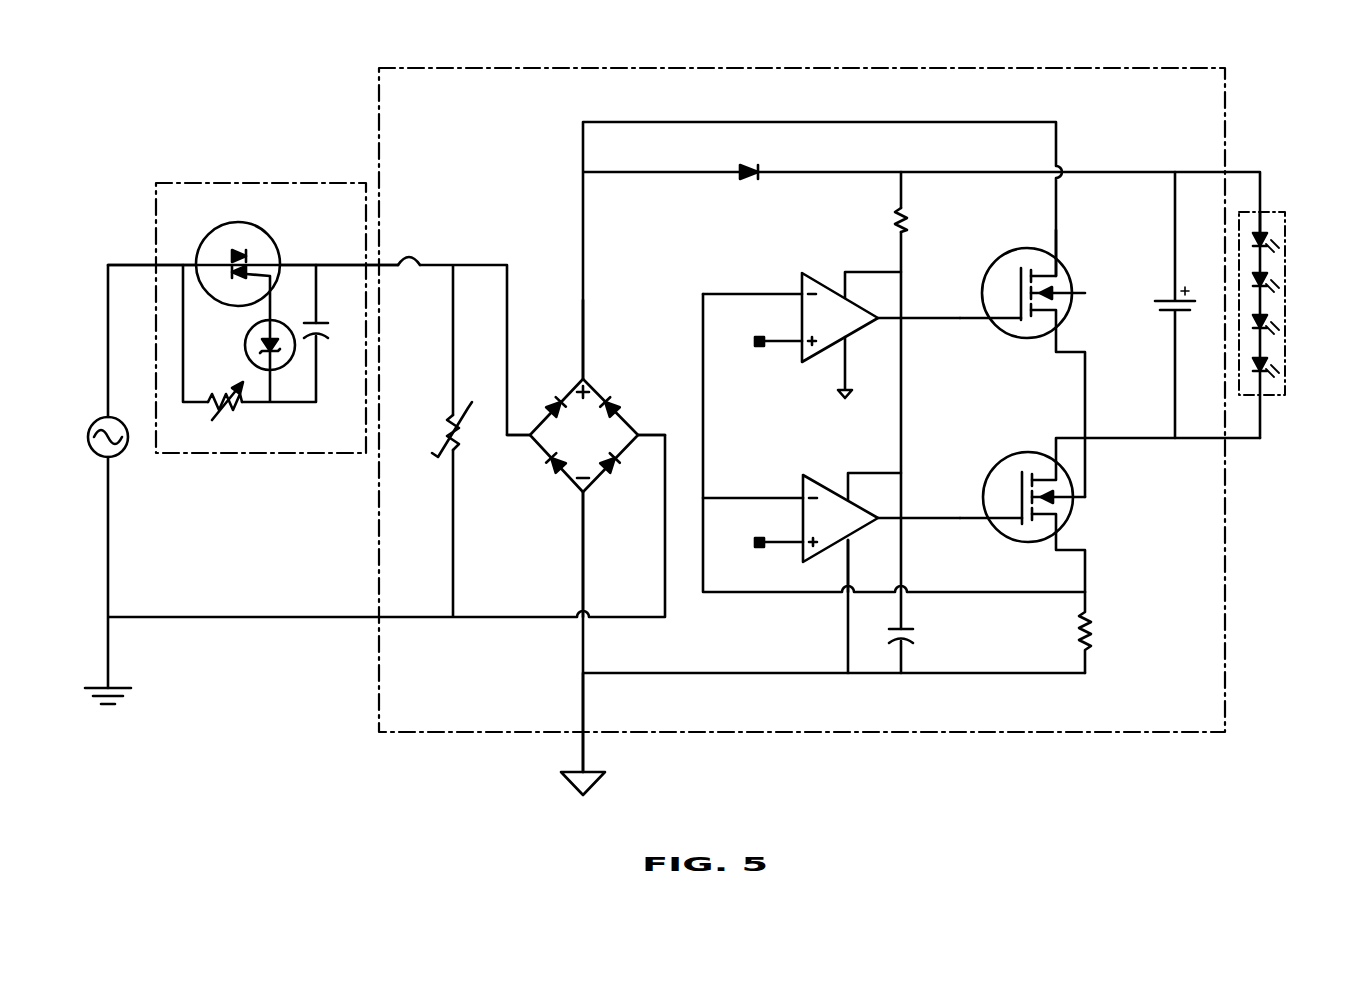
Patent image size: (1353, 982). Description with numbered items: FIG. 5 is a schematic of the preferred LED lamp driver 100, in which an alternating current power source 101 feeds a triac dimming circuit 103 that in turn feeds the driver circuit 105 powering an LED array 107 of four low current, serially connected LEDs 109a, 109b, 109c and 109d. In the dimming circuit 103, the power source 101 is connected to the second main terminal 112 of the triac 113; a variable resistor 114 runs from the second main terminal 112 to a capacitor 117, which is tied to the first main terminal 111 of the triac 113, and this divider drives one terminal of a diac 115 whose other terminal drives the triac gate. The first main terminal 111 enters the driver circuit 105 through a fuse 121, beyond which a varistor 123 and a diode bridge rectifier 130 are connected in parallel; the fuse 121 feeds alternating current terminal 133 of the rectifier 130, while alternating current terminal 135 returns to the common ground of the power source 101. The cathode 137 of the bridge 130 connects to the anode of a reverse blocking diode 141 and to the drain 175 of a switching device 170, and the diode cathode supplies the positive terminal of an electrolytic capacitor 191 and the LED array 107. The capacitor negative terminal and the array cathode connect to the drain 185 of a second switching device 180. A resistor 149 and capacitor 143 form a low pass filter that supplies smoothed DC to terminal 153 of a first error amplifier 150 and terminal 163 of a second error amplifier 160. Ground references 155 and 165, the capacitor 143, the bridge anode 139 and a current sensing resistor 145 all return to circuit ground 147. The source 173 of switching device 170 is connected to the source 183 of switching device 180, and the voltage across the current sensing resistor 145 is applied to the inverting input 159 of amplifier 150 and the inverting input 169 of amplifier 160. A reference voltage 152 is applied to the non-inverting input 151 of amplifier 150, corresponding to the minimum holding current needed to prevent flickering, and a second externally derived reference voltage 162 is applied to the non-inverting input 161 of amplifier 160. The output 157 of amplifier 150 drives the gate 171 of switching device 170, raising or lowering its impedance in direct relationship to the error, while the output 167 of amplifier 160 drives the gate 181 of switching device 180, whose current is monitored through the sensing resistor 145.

The LED lamp driver 100 is at (153, 122).
The alternating current power source 101 is at (114, 450).
The triac dimming circuit 103 is at (261, 318).
The driver circuit 105 is at (802, 400).
The LED array 107 is at (1273, 309).
The LED 109a is at (1292, 240).
The LED 109b is at (1292, 282).
The LED 109c is at (1292, 324).
The LED 109d is at (1292, 366).
The first main terminal 111 is at (339, 247).
The second main terminal 112 is at (157, 247).
The triac 113 is at (242, 256).
The variable resistor 114 is at (230, 413).
The diac 115 is at (250, 345).
The capacitor 117 is at (336, 347).
The fuse 121 is at (416, 280).
The varistor 123 is at (445, 446).
The diode bridge rectifier 130 is at (584, 435).
The alternating current terminal 133 is at (516, 452).
The alternating current terminal 135 is at (656, 419).
The cathode 137 is at (607, 339).
The anode 139 is at (607, 554).
The reverse blocking diode 141 is at (753, 189).
The capacitor 143 is at (922, 644).
The current sensing resistor 145 is at (1109, 632).
The circuit ground 147 is at (598, 734).
The resistor 149 is at (884, 220).
The first error amplifier 150 is at (840, 317).
The non-inverting input 151 is at (782, 328).
The reference voltage 152 is at (737, 341).
The terminal 153 is at (873, 285).
The ground reference 155 is at (866, 367).
The output 157 is at (919, 303).
The inverting input 159 is at (753, 280).
The second error amplifier 160 is at (840, 518).
The non-inverting input 161 is at (782, 528).
The reference voltage input 162 is at (738, 540).
The terminal 163 is at (874, 487).
The ground reference 165 is at (871, 566).
The output 167 is at (919, 504).
The inverting input 169 is at (754, 484).
The switching device 170 is at (1033, 311).
The gate 171 is at (989, 332).
The source 173 is at (1082, 374).
The drain 175 is at (1069, 253).
The switching device 180 is at (1034, 514).
The gate 181 is at (989, 530).
The source 183 is at (1083, 553).
The drain 185 is at (1146, 455).
The electrolytic capacitor 191 is at (1189, 305).